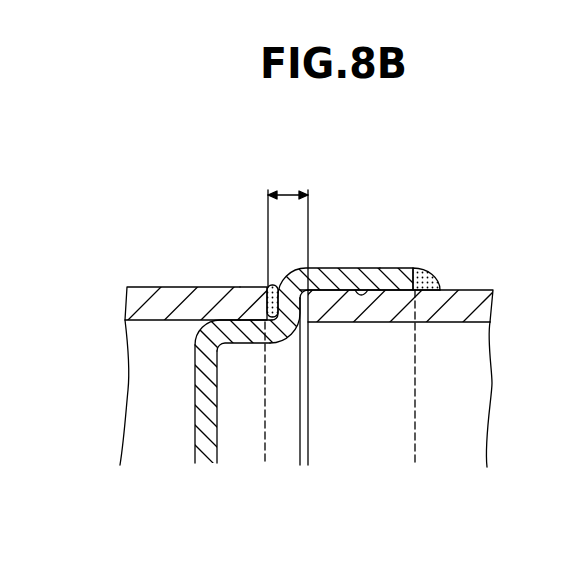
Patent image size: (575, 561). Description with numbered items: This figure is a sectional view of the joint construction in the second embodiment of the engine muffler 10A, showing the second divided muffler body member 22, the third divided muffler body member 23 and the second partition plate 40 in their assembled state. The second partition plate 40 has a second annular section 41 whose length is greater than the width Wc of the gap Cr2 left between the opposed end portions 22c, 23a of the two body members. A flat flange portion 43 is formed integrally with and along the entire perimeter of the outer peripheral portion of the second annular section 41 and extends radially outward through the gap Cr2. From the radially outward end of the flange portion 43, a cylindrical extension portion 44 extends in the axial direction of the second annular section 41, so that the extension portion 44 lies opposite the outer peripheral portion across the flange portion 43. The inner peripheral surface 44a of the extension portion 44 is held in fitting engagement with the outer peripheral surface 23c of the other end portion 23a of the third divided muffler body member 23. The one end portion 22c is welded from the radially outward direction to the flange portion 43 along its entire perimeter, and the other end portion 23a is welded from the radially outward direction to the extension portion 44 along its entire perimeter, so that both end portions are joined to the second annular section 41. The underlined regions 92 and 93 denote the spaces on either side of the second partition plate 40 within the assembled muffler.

The engine muffler 10A is at (245, 151).
The second divided muffler body member 22 is at (128, 303).
The one end portion of the second divided muffler body member 22c is at (226, 303).
The third divided muffler body member 23 is at (468, 306).
The other end portion of the third divided muffler body member 23a is at (450, 297).
The outer peripheral surface of the other end portion 23c is at (410, 272).
The second partition plate 40 is at (203, 458).
The second annular section 41 is at (253, 333).
The flange portion 43 is at (283, 338).
The extension portion 44 is at (343, 267).
The inner peripheral surface of the extension portion 44a is at (380, 288).
The first space 92 is at (170, 450).
The second space 93 is at (466, 452).
The gap Cr2 is at (266, 278).
The width of the gap Wc is at (288, 228).